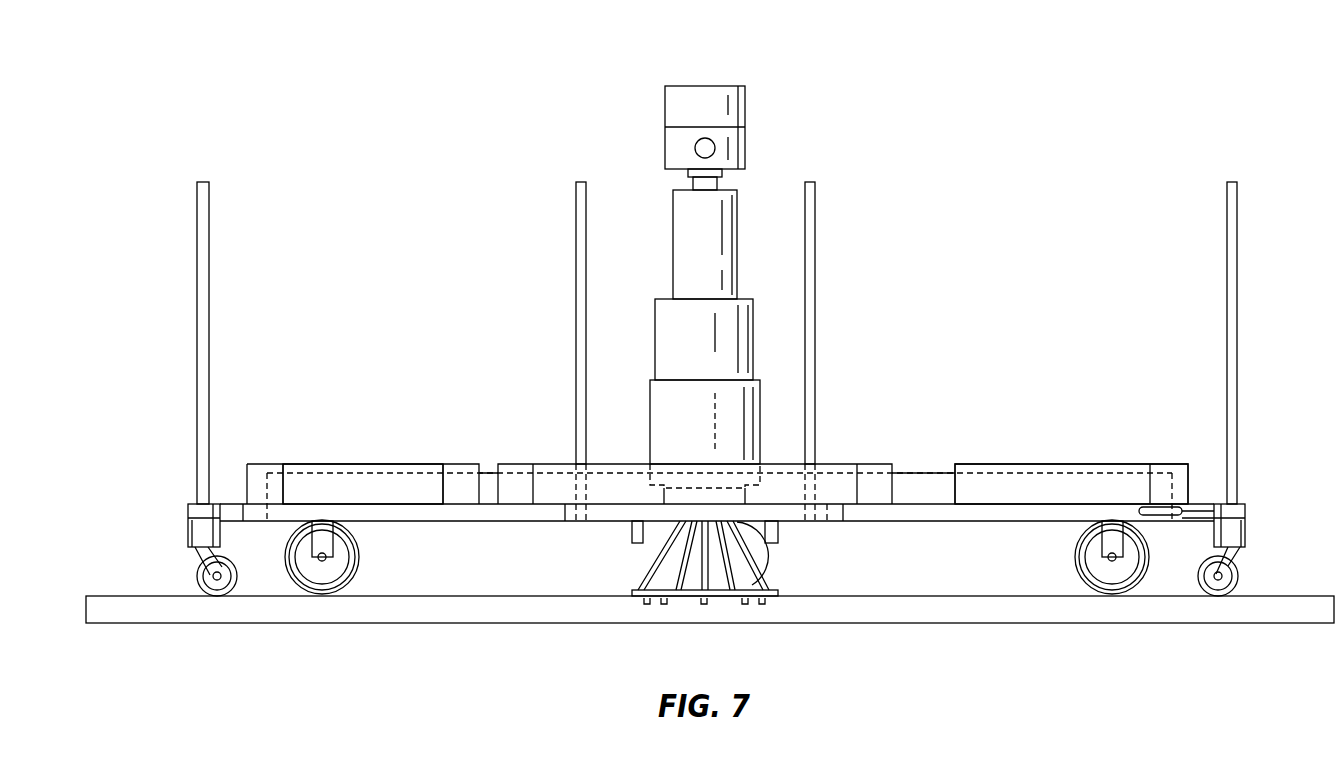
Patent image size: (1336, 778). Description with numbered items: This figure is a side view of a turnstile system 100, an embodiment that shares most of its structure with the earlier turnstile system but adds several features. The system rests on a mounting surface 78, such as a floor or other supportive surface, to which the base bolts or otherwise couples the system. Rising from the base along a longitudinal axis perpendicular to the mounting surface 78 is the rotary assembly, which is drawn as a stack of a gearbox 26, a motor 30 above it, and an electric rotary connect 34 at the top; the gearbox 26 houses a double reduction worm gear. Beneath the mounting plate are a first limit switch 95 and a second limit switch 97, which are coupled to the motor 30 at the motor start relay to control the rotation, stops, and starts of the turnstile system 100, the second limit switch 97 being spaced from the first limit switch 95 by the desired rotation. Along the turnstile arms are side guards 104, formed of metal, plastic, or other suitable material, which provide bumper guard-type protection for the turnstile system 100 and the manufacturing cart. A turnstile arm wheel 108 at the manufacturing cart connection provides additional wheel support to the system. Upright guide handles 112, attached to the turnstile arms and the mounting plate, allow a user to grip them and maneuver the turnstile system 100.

The turnstile system 100 is at (1065, 118).
The mounting surface 78 is at (160, 612).
The turnstile arm wheel 108 is at (1238, 578).
The guide handle 112 is at (204, 245).
The side guard 104 is at (368, 464).
The electric rotary connect 34 is at (745, 108).
The motor 30 is at (738, 223).
The gearbox 26 is at (656, 320).
The first limit switch 95 is at (632, 533).
The second limit switch 97 is at (778, 533).